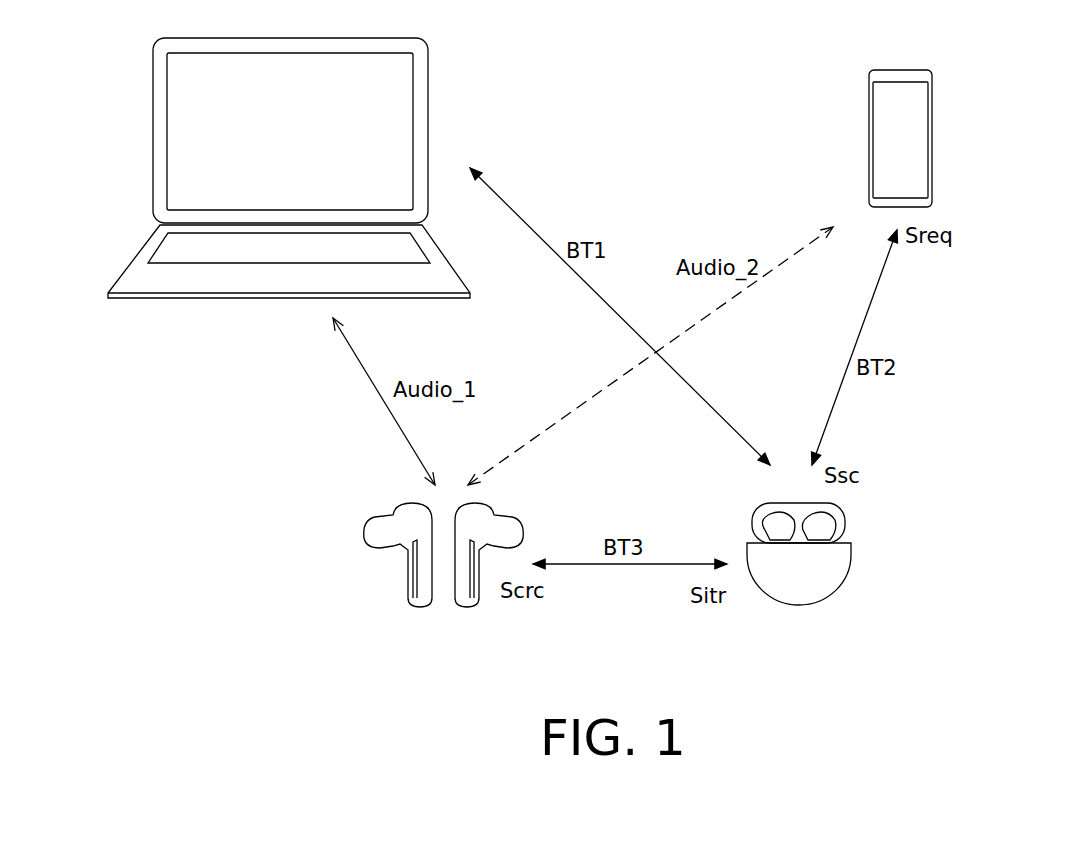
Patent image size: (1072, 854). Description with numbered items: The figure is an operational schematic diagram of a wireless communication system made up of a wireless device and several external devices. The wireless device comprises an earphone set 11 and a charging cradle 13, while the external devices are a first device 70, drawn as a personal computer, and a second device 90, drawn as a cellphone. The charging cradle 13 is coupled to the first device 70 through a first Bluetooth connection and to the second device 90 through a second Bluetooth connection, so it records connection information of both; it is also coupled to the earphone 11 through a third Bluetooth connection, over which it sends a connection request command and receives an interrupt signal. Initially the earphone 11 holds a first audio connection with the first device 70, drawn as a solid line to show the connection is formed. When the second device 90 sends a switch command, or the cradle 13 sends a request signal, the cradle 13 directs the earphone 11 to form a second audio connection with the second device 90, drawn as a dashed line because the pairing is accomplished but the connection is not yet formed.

The earphone set 11 is at (408, 578).
The charging cradle 13 is at (851, 563).
The first device 70 is at (427, 103).
The second device 90 is at (932, 137).